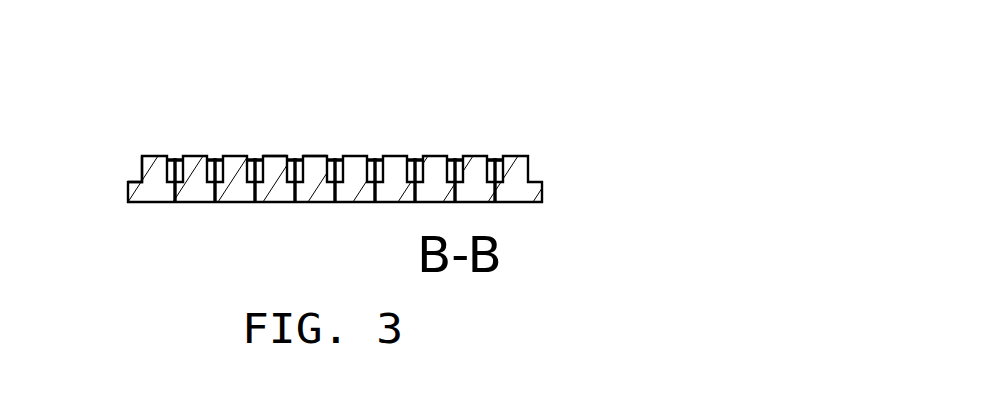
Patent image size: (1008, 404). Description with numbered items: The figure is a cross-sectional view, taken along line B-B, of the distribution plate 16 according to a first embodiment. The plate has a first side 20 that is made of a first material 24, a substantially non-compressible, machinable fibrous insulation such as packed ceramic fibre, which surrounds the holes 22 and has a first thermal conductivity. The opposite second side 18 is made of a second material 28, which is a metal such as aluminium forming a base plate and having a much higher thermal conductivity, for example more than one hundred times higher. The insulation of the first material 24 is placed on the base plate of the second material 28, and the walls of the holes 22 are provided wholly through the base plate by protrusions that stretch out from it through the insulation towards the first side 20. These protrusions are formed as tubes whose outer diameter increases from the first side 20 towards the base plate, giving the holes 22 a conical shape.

The distribution plate 16 is at (364, 140).
The second side 18 is at (245, 203).
The first side 20 is at (267, 156).
The holes 22 is at (479, 129).
The first material 24 is at (303, 122).
The second material 28 is at (111, 150).